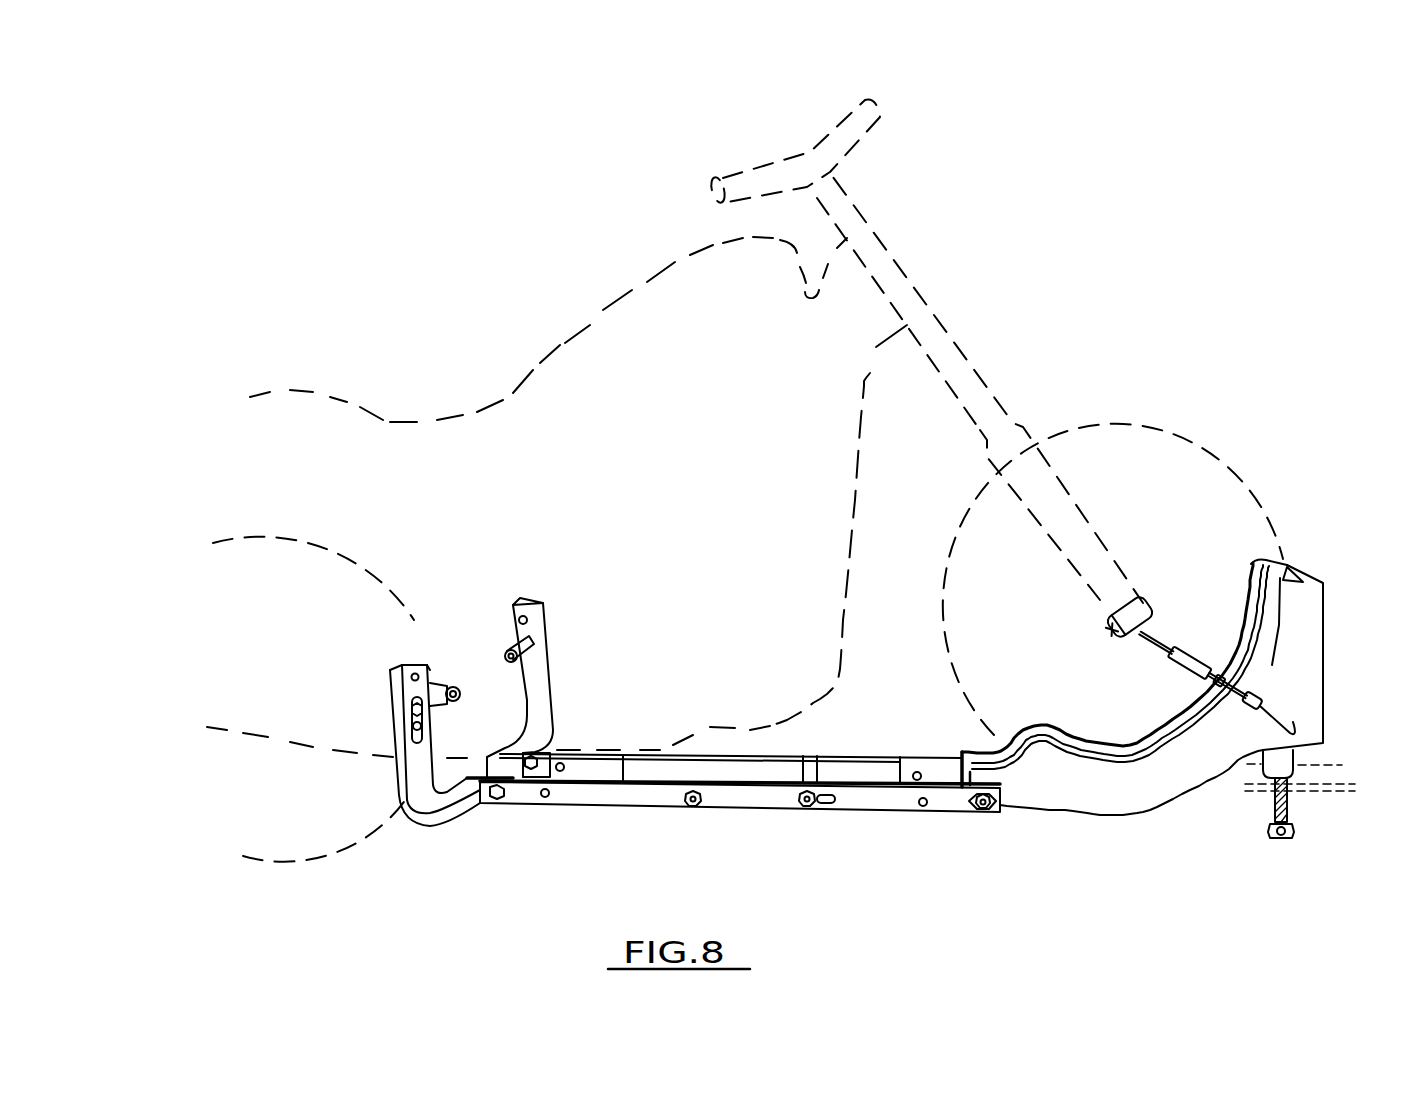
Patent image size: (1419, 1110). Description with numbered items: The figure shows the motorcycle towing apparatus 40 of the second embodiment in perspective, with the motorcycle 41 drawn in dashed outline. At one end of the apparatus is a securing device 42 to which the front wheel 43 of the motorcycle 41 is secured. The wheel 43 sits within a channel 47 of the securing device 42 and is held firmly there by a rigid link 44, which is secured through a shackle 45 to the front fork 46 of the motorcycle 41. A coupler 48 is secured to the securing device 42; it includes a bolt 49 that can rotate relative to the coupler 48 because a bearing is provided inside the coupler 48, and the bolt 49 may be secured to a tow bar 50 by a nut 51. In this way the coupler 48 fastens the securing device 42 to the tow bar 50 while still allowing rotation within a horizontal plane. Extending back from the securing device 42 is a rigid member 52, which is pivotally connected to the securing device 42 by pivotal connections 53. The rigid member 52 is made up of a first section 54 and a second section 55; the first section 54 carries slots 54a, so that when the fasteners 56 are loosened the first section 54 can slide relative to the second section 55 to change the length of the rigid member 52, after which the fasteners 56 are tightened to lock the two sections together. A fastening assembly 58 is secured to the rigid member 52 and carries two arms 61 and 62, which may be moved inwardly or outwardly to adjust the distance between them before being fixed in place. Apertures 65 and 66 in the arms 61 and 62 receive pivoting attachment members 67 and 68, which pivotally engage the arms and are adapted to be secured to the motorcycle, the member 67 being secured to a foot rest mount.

The motorcycle towing apparatus 40 is at (742, 810).
The motorcycle 41 is at (880, 300).
The securing device 42 is at (1113, 810).
The front wheel 43 is at (1167, 467).
The rigid link 44 is at (1187, 660).
The shackle 45 is at (1140, 605).
The front fork 46 is at (1093, 553).
The channel 47 is at (1298, 580).
The coupler 48 is at (1290, 757).
The bolt 49 is at (1287, 803).
The tow bar 50 is at (1252, 788).
The nut 51 is at (1287, 838).
The rigid member 52 is at (748, 827).
The pivotal connections 53 is at (986, 810).
The first section 54 is at (880, 797).
The slots 54a is at (822, 803).
The second section 55 is at (617, 797).
The fasteners 56 is at (693, 805).
The fastening assembly 58 is at (540, 656).
The arm 61 is at (412, 744).
The arm 62 is at (537, 693).
The aperture 65 is at (411, 718).
The aperture 66 is at (540, 610).
The pivoting attachment member 67 is at (445, 688).
The pivoting attachment member 68 is at (513, 653).